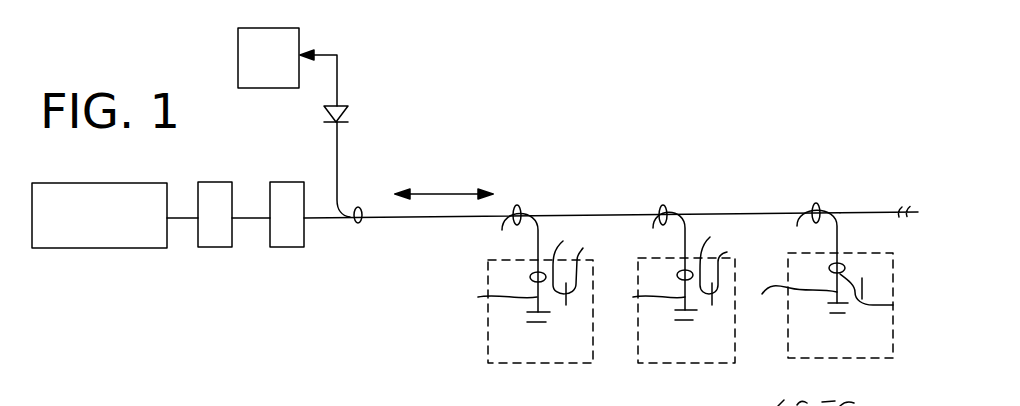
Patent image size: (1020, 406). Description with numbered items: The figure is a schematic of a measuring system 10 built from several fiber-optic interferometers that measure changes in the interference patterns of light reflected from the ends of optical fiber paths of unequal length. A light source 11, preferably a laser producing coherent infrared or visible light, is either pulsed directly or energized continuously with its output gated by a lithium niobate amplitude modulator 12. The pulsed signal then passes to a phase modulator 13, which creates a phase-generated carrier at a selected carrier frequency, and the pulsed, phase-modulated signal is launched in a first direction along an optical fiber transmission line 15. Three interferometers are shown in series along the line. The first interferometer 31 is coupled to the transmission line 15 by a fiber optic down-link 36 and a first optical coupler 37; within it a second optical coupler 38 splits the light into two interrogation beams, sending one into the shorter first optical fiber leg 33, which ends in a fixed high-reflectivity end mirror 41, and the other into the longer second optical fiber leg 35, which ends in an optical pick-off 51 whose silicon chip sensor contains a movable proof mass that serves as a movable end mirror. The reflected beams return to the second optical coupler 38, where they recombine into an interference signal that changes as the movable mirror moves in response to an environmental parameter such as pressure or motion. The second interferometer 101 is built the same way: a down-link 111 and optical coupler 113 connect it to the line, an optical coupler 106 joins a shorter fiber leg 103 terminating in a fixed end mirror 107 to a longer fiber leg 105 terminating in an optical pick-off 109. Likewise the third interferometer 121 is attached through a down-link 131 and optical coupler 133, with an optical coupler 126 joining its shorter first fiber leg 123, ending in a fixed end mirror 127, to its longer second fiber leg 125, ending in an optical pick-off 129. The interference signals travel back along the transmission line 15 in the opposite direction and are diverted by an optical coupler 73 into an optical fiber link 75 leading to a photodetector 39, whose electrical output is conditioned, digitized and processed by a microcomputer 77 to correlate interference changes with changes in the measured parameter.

The measuring system 10 is at (590, 88).
The light source 11 is at (107, 183).
The lithium niobate amplitude modulator 12 is at (227, 182).
The phase modulator 13 is at (290, 247).
The optical fiber transmission line 15 is at (408, 218).
The optical coupler 73 is at (358, 223).
The optical fiber link 75 is at (338, 147).
The photodetector 39 is at (348, 109).
The microcomputer 77 is at (284, 72).
The second interferometer 101 is at (488, 316).
The optical coupler 113 is at (516, 204).
The fiber optic down-link 111 is at (537, 242).
The optical coupler 106 is at (530, 277).
The fiber leg 105 is at (489, 299).
The fiber leg 103 is at (571, 257).
The fixed end mirror 107 is at (596, 268).
The optical pick-off 109 is at (546, 323).
The third interferometer 121 is at (633, 338).
The optical coupler 133 is at (663, 204).
The fiber optic down-link 131 is at (685, 240).
The optical coupler 126 is at (677, 275).
The second fiber leg 125 is at (641, 299).
The first fiber leg 123 is at (721, 253).
The fixed end mirror 127 is at (736, 267).
The optical pick-off 129 is at (693, 321).
The first interferometer 31 is at (893, 253).
The first optical coupler 37 is at (818, 203).
The fiber optic down-link 36 is at (845, 213).
The second optical coupler 38 is at (843, 262).
The second optical fiber leg 35 is at (792, 267).
The first optical fiber leg 33 is at (893, 305).
The fixed end mirror 41 is at (862, 278).
The optical pick-off 51 is at (845, 314).